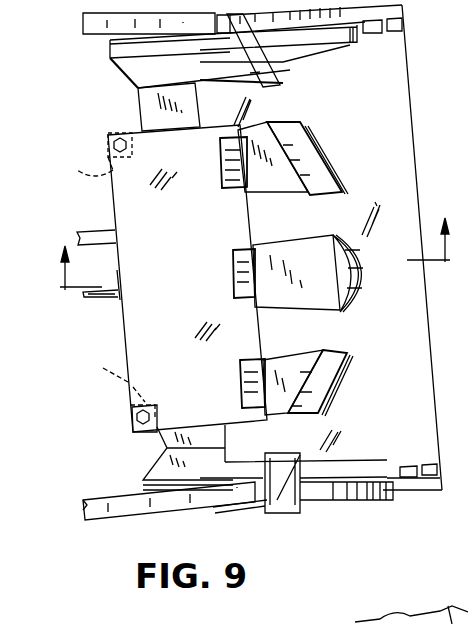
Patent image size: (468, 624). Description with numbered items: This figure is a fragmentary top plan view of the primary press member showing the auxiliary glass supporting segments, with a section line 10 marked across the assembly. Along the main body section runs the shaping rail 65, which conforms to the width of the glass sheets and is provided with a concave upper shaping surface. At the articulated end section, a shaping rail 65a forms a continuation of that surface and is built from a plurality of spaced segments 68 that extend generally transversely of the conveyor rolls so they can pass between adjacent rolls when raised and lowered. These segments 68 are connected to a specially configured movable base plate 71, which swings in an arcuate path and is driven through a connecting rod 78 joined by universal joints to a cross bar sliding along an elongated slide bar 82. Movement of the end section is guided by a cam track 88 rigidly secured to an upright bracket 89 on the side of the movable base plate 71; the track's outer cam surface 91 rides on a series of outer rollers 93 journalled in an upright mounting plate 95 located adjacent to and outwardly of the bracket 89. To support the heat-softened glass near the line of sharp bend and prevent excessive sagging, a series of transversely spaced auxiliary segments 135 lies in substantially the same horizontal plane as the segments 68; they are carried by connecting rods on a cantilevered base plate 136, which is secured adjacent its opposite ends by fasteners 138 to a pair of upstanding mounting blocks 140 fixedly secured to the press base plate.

The section line 10 is at (259, 271).
The shaping rail 65 is at (93, 25).
The shaping rail 65a is at (315, 143).
The segments 68 is at (353, 310).
The movable base plate 71 is at (143, 100).
The connecting rod 78 is at (118, 287).
The slide bar 82 is at (100, 232).
The cam track 88 is at (346, 32).
The upright bracket 89 is at (283, 60).
The outer cam surface 91 is at (402, 6).
The outer rollers 93 is at (395, 28).
The upright mounting plate 95 is at (387, 490).
The auxiliary segments 135 is at (227, 162).
The cantilevered base plate 136 is at (181, 318).
The fasteners 138 is at (113, 140).
The mounting blocks 140 is at (106, 282).